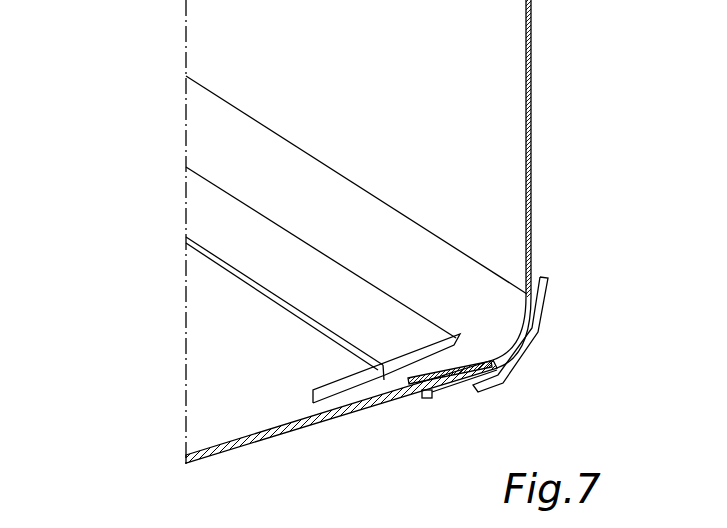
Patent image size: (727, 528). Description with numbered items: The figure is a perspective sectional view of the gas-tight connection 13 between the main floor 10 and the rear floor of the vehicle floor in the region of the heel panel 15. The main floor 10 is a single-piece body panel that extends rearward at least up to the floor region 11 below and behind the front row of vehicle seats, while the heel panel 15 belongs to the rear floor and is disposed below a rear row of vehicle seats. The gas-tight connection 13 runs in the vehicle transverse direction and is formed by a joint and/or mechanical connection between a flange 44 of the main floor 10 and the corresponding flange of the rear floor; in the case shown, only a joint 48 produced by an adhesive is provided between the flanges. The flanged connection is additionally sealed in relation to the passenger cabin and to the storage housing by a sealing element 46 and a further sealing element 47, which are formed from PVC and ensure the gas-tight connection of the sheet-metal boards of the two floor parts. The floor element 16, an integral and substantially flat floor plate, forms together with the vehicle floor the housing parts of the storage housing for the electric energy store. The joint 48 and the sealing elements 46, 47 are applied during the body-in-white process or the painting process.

The main floor 10 is at (215, 352).
The floor region 11 is at (158, 277).
The gas-tight connection 13 is at (103, 78).
The heel panel 15 is at (532, 45).
The floor element 16 is at (503, 157).
The flange 44 is at (428, 397).
The sealing element 46 is at (343, 386).
The sealing element 47 is at (523, 358).
The joint 48 is at (465, 379).